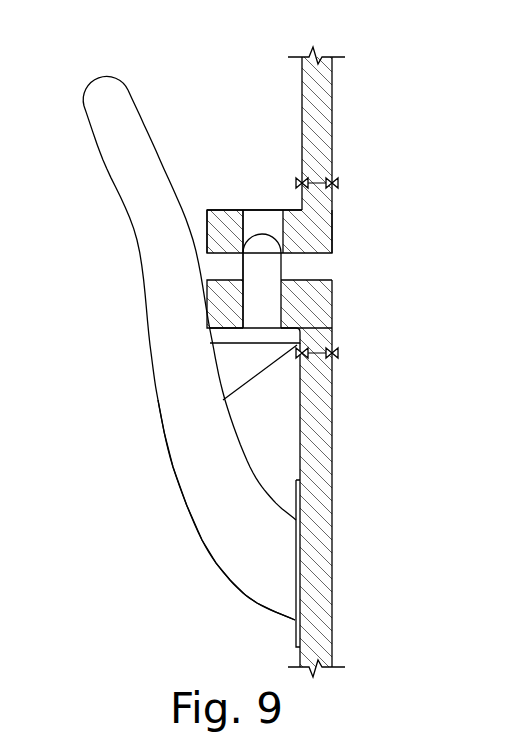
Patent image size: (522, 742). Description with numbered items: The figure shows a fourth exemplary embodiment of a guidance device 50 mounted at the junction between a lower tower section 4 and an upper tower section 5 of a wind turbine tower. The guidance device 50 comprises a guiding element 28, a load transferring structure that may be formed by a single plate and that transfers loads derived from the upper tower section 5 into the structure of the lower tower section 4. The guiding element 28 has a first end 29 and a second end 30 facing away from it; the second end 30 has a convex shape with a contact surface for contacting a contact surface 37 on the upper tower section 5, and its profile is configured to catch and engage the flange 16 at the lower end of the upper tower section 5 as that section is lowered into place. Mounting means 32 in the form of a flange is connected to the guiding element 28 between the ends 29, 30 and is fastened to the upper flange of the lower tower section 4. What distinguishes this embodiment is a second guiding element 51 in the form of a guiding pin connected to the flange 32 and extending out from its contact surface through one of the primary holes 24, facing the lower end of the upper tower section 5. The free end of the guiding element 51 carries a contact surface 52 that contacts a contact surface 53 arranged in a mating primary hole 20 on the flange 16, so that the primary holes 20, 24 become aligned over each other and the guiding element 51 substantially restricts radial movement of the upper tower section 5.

The lower tower section 4 is at (318, 588).
The upper tower section 5 is at (318, 115).
The flange 16 is at (215, 223).
The primary holes 20 is at (268, 208).
The primary holes 24 is at (243, 295).
The guiding element 28 is at (193, 344).
The first end 29 is at (205, 542).
The second end 30 is at (140, 102).
The mounting means 32 is at (225, 338).
The contact surface 37 is at (203, 232).
The guidance device 50 is at (148, 322).
The second guiding element 51 is at (272, 303).
The contact surface 52 is at (285, 258).
The contact surface 53 is at (245, 232).